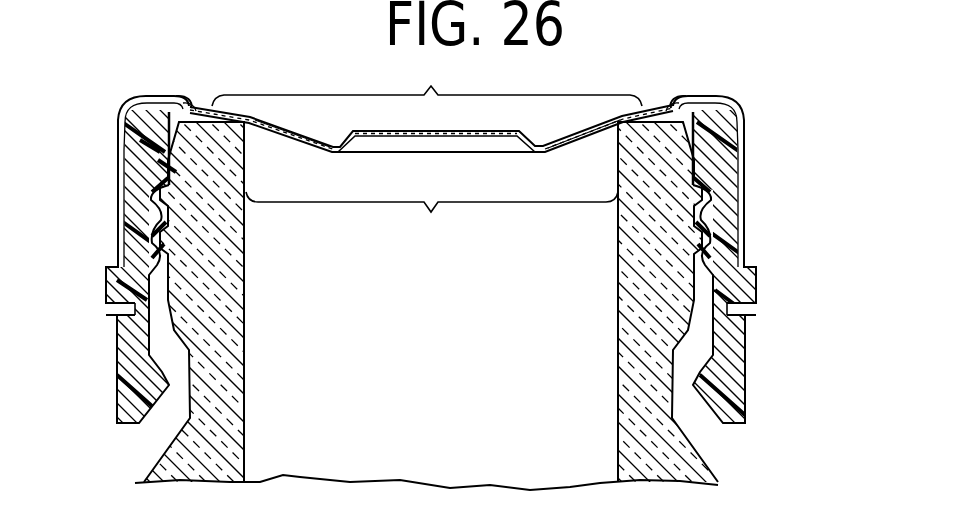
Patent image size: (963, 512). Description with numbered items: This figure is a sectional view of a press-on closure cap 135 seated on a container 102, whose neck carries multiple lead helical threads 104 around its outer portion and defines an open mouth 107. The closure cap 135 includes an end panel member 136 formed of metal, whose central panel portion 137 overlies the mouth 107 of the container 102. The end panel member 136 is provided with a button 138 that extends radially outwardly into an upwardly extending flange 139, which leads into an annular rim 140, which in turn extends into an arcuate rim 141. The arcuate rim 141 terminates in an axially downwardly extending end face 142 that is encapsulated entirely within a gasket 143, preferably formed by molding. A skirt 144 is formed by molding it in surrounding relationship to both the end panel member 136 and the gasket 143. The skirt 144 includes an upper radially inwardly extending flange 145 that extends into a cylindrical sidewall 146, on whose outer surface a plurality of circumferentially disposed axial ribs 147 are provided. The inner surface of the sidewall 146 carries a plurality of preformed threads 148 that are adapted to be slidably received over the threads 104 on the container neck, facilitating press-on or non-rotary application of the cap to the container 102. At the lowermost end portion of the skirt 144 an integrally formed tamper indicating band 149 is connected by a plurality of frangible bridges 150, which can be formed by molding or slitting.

The container 102 is at (140, 462).
The multiple lead helical threads 104 is at (192, 263).
The open mouth 107 is at (432, 217).
The PT closure cap 135 is at (770, 92).
The end panel member 136 is at (573, 148).
The central panel portion 137 is at (431, 105).
The button 138 is at (393, 132).
The upwardly extending flange 139 is at (289, 138).
The annular rim 140 is at (203, 108).
The arcuate rim 141 is at (165, 108).
The end face 142 is at (128, 142).
The gasket 143 is at (160, 165).
The skirt 144 is at (750, 128).
The upper radially inwardly extending flange 145 is at (710, 92).
The cylindrical sidewall 146 is at (730, 170).
The axial ribs 147 is at (745, 218).
The preformed threads 148 is at (150, 262).
The tamper indicating band 149 is at (130, 384).
The frangible bridges 150 is at (140, 305).